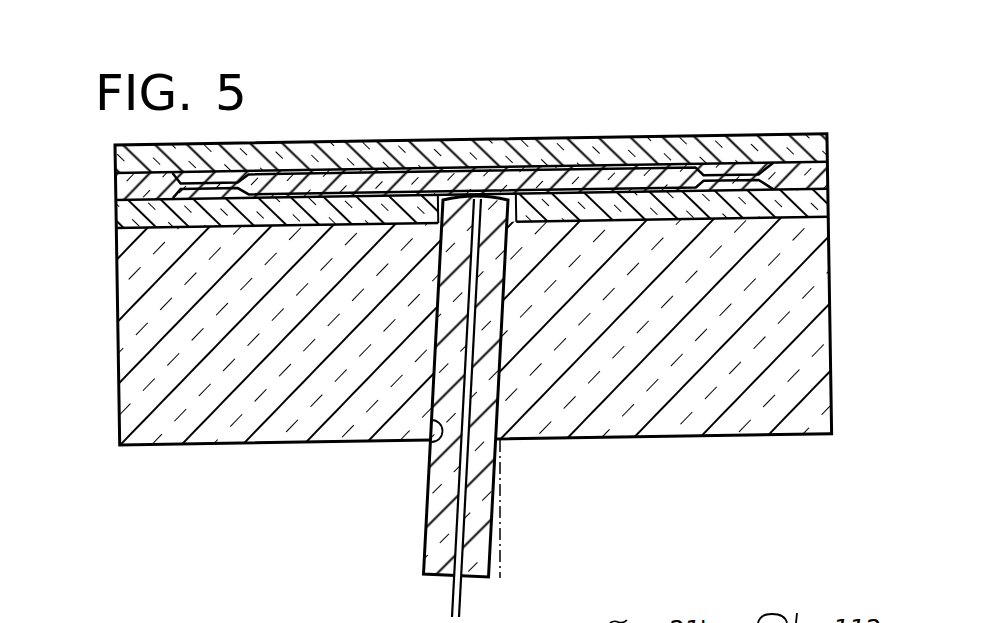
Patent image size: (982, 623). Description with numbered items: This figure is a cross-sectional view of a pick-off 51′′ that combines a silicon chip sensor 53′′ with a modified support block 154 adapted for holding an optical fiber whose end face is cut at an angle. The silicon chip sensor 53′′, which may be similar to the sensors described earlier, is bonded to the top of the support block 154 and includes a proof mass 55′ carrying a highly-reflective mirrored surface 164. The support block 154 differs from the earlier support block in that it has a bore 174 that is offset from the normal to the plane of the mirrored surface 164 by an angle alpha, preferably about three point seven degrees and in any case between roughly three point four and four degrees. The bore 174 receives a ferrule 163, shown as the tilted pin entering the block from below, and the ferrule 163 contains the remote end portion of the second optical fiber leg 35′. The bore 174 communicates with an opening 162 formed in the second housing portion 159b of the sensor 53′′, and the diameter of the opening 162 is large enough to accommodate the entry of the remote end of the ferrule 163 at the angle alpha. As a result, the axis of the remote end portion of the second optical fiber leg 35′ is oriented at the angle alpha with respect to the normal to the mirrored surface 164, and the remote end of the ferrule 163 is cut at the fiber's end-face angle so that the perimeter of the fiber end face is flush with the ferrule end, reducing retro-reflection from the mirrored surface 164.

The pick-off 51′′ is at (474, 300).
The silicon chip sensor 53′′ is at (474, 161).
The proof mass 55′ is at (582, 177).
The support block 154 is at (757, 422).
The second housing portion 159b is at (822, 204).
The opening 162 is at (516, 207).
The ferrule 163 is at (432, 500).
The bore 174 is at (430, 447).
The second optical fiber leg 35′ is at (453, 600).
The mirrored surface 164 is at (809, 603).